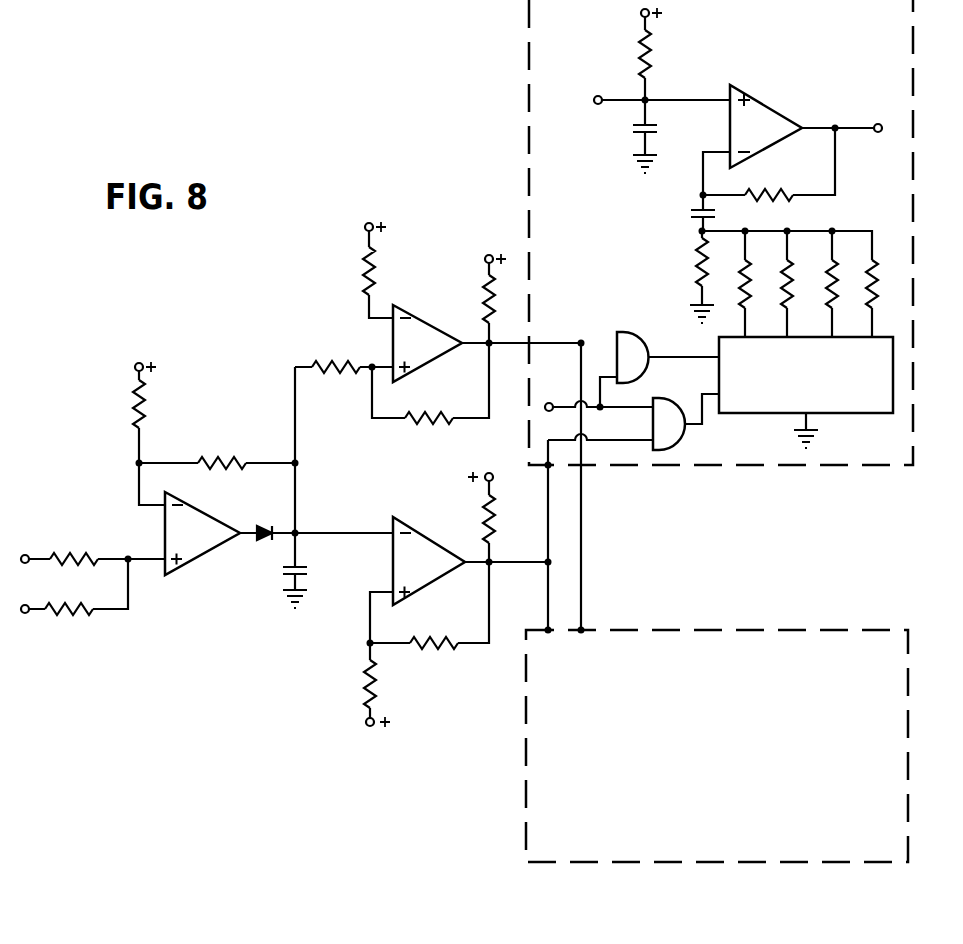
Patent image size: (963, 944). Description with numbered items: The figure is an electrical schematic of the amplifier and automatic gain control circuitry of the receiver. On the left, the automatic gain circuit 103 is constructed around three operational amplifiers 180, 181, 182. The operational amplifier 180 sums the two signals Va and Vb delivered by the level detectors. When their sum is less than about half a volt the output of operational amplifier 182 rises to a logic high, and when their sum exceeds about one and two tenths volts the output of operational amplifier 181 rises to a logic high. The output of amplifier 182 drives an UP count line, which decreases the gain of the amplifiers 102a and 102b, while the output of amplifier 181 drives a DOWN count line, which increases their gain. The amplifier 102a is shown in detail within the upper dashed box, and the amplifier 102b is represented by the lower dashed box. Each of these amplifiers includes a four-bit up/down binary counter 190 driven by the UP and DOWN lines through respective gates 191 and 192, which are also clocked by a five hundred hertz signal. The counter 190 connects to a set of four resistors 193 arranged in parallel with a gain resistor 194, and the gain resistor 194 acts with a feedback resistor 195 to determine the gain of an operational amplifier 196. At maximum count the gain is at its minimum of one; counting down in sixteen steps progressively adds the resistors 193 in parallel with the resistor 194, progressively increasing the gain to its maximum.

The amplifier 102a is at (528, 72).
The amplifier 102b is at (740, 765).
The automatic gain circuit 103 is at (251, 691).
The operational amplifier 180 is at (208, 544).
The operational amplifier 181 is at (432, 354).
The operational amplifier 182 is at (432, 574).
The 4-bit up/down binary counter 190 is at (848, 413).
The NAND gate 191 is at (675, 450).
The NAND gate 192 is at (630, 332).
The set of four resistors 193 is at (840, 213).
The gain resistor 194 is at (700, 266).
The feedback resistor 195 is at (776, 196).
The operational amplifier 196 is at (771, 105).